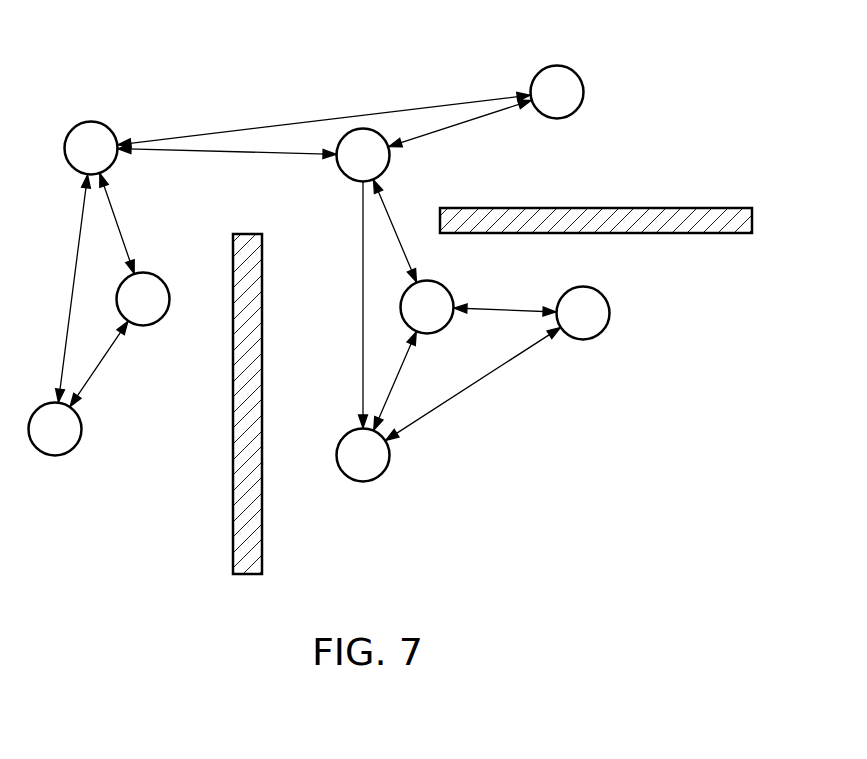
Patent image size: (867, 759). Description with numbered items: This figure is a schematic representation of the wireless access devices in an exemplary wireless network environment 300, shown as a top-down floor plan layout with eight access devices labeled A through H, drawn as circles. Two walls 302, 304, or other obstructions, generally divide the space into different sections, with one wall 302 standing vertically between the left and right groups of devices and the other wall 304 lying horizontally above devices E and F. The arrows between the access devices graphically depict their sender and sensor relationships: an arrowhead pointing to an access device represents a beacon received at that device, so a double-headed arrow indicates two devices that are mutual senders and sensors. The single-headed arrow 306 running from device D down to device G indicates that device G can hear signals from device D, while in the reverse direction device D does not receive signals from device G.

The wireless network environment 300 is at (181, 86).
The wall 302 is at (263, 286).
The wall 304 is at (660, 208).
The arrow 306 is at (362, 349).